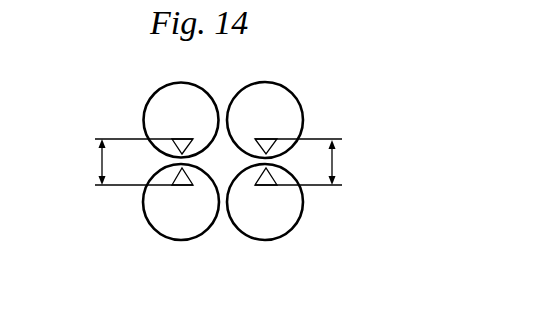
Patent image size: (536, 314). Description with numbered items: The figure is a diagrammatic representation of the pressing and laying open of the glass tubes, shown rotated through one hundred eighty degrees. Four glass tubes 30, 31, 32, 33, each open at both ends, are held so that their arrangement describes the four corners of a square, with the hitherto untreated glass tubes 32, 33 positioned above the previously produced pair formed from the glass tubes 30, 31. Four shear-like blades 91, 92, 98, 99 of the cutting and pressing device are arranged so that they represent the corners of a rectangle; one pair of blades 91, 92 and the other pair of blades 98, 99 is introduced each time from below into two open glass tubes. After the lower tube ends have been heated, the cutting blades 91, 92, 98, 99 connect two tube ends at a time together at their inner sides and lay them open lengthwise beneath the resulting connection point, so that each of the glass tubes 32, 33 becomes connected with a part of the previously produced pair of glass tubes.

The glass tube 30 is at (283, 215).
The glass tube 31 is at (167, 215).
The glass tube 32 is at (282, 105).
The glass tube 33 is at (175, 105).
The blade 91 is at (318, 139).
The blade 92 is at (315, 185).
The blade 98 is at (127, 139).
The blade 99 is at (115, 185).